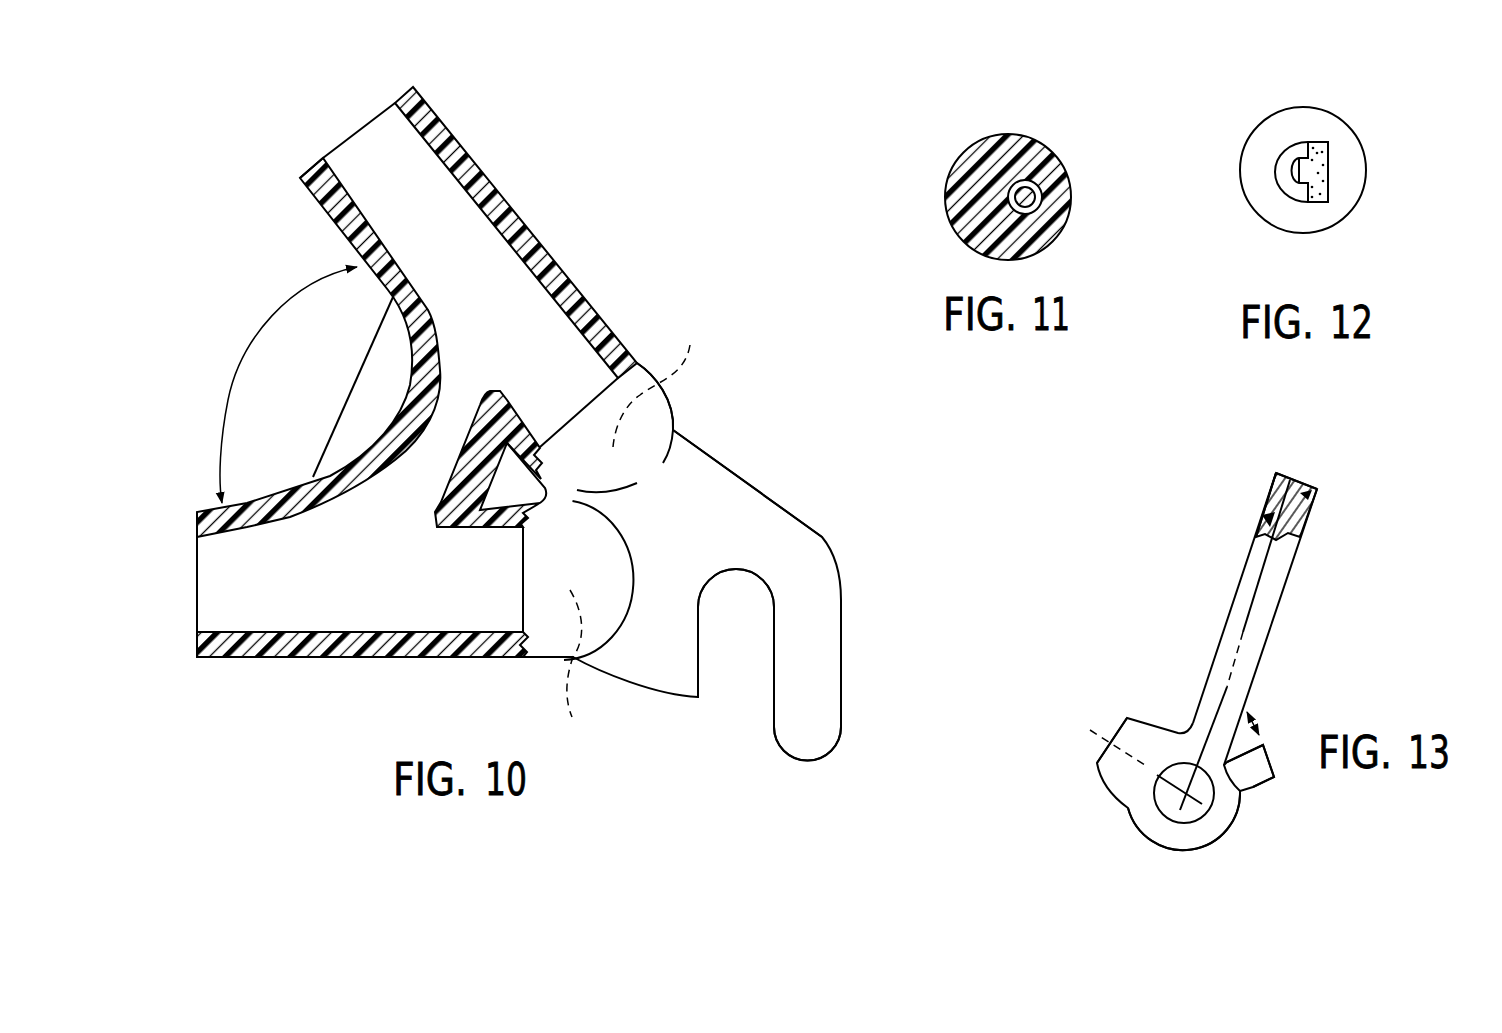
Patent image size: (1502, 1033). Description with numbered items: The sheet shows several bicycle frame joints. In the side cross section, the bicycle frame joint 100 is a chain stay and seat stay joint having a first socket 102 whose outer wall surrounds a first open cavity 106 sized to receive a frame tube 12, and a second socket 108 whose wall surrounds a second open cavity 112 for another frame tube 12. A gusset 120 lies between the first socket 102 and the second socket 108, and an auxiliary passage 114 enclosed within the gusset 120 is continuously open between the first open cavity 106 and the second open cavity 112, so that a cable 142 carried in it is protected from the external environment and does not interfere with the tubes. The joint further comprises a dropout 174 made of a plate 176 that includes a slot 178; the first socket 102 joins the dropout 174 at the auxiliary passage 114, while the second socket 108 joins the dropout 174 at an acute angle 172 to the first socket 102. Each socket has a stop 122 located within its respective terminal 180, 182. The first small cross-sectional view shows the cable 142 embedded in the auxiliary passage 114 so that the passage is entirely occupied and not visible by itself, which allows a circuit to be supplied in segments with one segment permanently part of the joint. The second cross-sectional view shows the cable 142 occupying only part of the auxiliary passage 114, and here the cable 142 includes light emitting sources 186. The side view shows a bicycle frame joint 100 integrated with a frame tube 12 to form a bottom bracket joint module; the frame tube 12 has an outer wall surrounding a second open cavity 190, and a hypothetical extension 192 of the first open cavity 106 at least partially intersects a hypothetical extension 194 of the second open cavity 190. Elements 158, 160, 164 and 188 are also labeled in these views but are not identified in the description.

In FIG. 13, the frame tube 12 is at (1293, 568).
In FIG. 10, the bicycle frame joint 100 is at (600, 160).
In FIG. 11, the bicycle frame joint 100 is at (958, 162).
In FIG. 12, the bicycle frame joint 100 is at (1352, 122).
In FIG. 13, the bicycle frame joint 100 is at (1257, 830).
In FIG. 10, the first socket 102 is at (328, 130).
In FIG. 13, the first socket 102 is at (1103, 723).
In FIG. 10, the first open cavity 106 is at (420, 186).
In FIG. 10, the second socket 108 is at (180, 587).
In FIG. 10, the second open cavity 112 is at (312, 600).
In FIG. 10, the auxiliary passage 114 is at (465, 456).
In FIG. 11, the auxiliary passage 114 is at (1034, 217).
In FIG. 12, the auxiliary passage 114 is at (1287, 190).
In FIG. 10, the gusset 120 is at (372, 407).
In FIG. 10, the stop 122 is at (634, 530).
In FIG. 11, the cable 142 is at (1047, 192).
In FIG. 12, the cable 142 is at (1330, 162).
In FIG. 13, the boss 158 is at (1180, 867).
In FIG. 13, the hole 160 is at (1160, 805).
In FIG. 13, the tab 164 is at (1252, 775).
In FIG. 10, the acute angle 172 is at (240, 360).
In FIG. 13, the acute angle 172 is at (1265, 726).
In FIG. 10, the dropout 174 is at (834, 496).
In FIG. 10, the plate 176 is at (730, 513).
In FIG. 10, the slot 178 is at (770, 623).
In FIG. 10, the terminal 180 is at (680, 411).
In FIG. 10, the terminal 182 is at (646, 577).
In FIG. 12, the light emitting sources 186 is at (1277, 167).
In FIG. 13, the shaft edge 188 is at (1265, 502).
In FIG. 13, the second open cavity 190 is at (1298, 483).
In FIG. 13, the hypothetical extension 192 is at (1106, 772).
In FIG. 13, the hypothetical extension 194 is at (1243, 632).